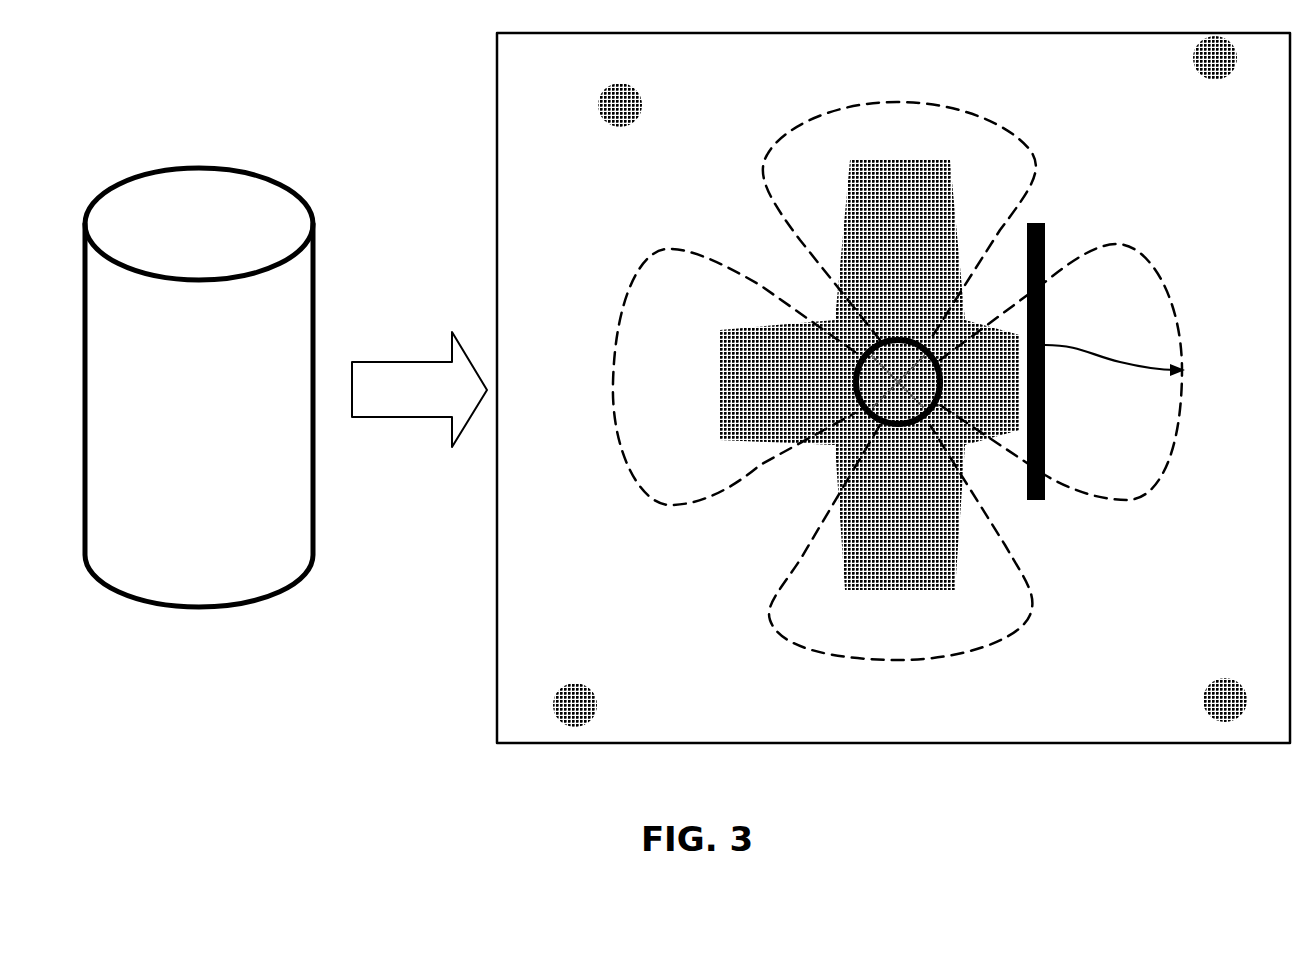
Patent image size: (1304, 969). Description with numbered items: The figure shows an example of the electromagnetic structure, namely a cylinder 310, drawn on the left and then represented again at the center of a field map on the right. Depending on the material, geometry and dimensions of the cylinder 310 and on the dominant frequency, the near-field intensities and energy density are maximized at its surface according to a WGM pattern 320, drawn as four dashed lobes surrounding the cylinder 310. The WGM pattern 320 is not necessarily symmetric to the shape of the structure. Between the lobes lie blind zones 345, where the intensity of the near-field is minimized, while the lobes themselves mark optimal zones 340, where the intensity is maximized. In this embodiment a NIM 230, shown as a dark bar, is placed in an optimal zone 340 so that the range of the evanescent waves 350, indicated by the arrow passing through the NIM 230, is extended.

The cylinder 310 is at (95, 200).
The WGM pattern 320 is at (800, 125).
The blind zone 345 is at (857, 318).
The NIM 230 is at (1047, 243).
The evanescent waves 350 is at (1113, 354).
The optimal zone 340 is at (1127, 500).